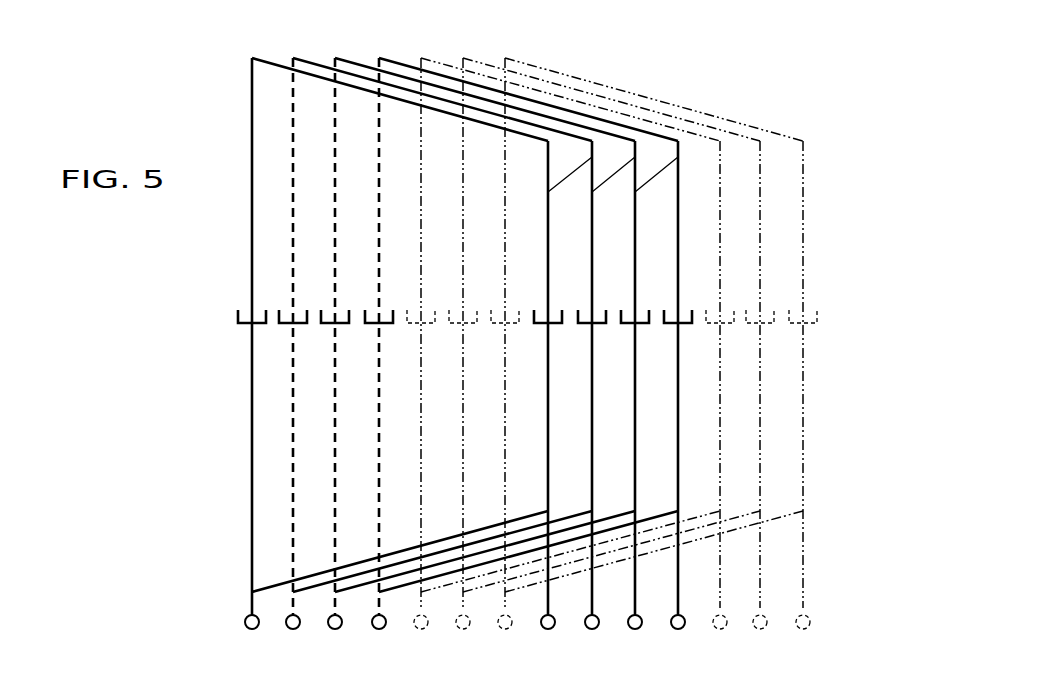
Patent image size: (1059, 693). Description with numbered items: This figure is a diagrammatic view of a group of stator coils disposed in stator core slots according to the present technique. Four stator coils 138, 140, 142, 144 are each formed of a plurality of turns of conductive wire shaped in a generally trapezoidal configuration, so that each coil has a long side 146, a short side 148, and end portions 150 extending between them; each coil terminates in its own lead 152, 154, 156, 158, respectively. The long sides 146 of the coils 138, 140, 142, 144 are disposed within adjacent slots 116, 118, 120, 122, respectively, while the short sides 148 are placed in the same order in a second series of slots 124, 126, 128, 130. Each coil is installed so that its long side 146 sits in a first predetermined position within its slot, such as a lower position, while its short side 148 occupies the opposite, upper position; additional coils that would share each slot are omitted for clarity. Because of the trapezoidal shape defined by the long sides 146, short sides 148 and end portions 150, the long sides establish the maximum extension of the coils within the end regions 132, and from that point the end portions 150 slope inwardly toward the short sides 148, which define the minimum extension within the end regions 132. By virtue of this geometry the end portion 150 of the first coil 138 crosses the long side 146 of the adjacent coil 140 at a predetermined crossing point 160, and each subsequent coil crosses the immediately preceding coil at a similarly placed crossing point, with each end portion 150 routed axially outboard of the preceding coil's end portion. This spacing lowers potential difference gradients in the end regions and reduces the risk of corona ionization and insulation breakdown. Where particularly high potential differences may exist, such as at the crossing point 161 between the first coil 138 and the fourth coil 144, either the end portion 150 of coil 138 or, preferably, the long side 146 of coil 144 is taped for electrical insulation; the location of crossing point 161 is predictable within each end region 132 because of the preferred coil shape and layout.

The slot 116 is at (237, 313).
The slot 118 is at (287, 323).
The slot 120 is at (328, 323).
The slot 122 is at (371, 323).
The slot 124 is at (540, 325).
The slot 126 is at (585, 326).
The slot 128 is at (627, 326).
The slot 130 is at (670, 326).
The end region 132 is at (230, 92).
The stator coil 138 is at (263, 57).
The stator coil 140 is at (305, 57).
The stator coil 142 is at (357, 60).
The stator coil 144 is at (397, 58).
The long side 146 is at (379, 287).
The short side 148 is at (678, 182).
The end portion 150 is at (542, 115).
The lead 152 is at (242, 621).
The lead 154 is at (285, 621).
The lead 156 is at (329, 622).
The lead 158 is at (373, 622).
The crossing point 160 is at (379, 86).
The crossing point 161 is at (379, 96).